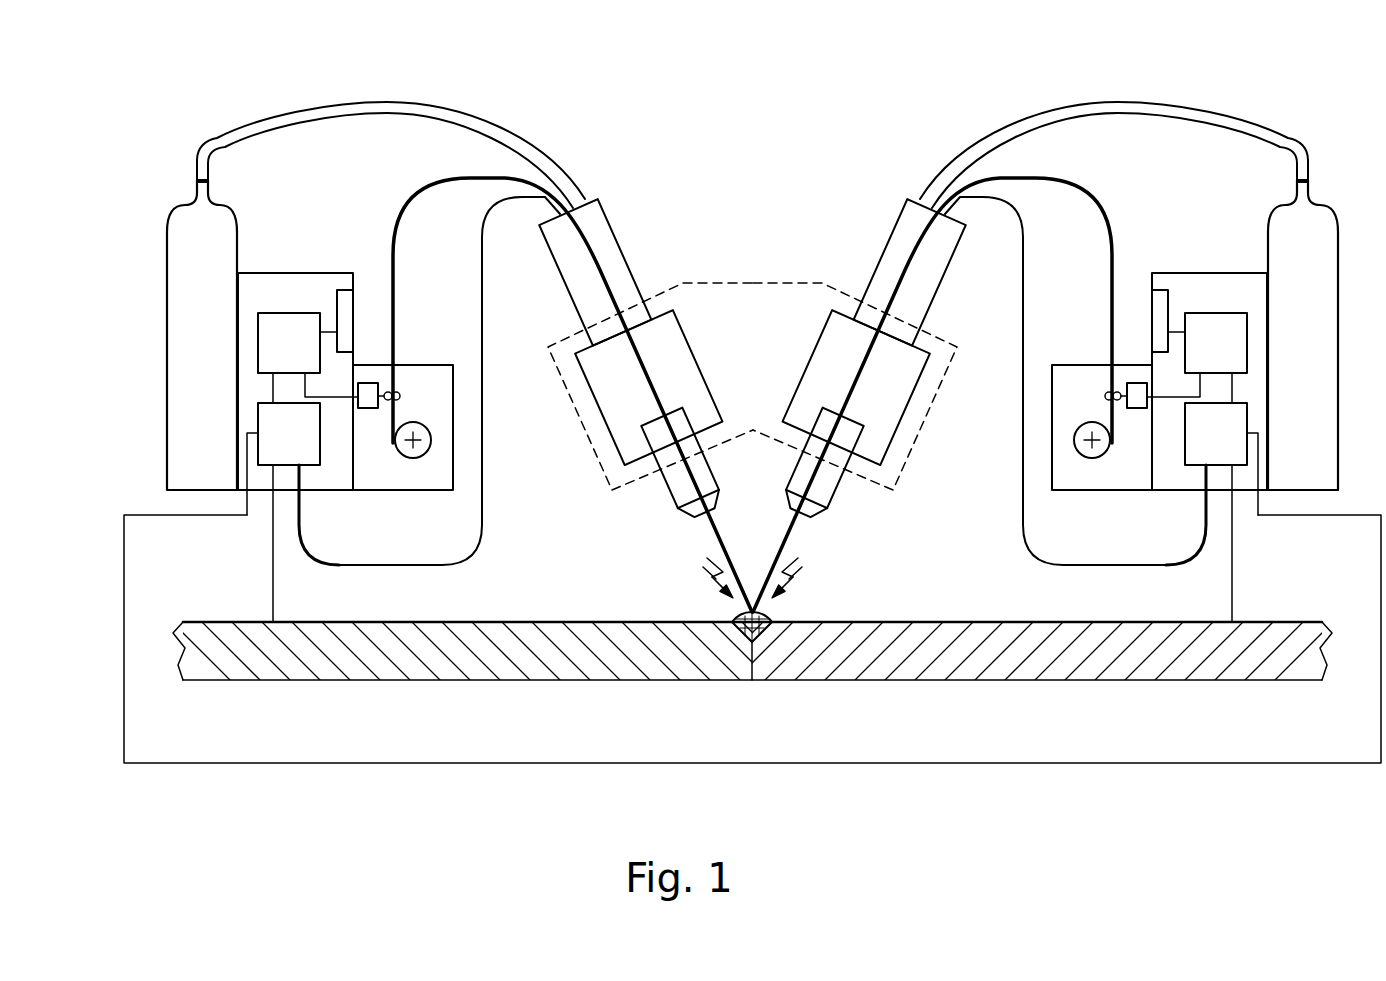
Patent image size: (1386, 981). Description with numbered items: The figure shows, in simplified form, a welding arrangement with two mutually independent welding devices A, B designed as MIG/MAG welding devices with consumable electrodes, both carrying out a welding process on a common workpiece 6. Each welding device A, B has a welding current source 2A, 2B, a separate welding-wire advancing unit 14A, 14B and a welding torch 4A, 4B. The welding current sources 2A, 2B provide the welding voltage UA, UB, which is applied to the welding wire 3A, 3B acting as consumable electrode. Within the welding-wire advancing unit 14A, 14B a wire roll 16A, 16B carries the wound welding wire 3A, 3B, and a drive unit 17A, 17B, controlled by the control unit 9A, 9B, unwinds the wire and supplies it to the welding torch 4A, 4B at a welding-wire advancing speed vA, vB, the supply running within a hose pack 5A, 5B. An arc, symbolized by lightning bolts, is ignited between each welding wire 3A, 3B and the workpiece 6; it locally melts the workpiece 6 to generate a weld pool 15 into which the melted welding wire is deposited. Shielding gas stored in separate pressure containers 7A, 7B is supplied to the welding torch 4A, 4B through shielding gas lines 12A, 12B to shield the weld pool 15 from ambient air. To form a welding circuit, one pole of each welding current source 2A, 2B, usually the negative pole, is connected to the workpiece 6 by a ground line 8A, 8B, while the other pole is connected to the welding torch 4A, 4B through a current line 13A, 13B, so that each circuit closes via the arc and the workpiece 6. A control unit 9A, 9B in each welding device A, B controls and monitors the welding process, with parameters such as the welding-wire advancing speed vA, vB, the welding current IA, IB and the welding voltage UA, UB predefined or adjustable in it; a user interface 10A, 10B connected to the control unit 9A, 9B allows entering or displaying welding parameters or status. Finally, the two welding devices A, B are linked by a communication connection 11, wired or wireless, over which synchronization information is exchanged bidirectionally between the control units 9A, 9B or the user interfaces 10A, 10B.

The welding current source 2A is at (310, 443).
The welding current source 2B is at (1195, 443).
The welding wire 3A is at (706, 527).
The welding wire 3B is at (799, 527).
The welding torch 4A is at (658, 268).
The welding torch 4B is at (847, 268).
The hose pack 5A is at (583, 277).
The hose pack 5B is at (922, 277).
The workpiece 6 is at (495, 650).
The container 7A is at (217, 338).
The container 7B is at (1288, 338).
The ground line 8A is at (270, 600).
The ground line 8B is at (1233, 603).
The control unit 9A is at (310, 353).
The control unit 9B is at (1195, 353).
The user interface 10A is at (338, 305).
The user interface 10B is at (1167, 305).
The communication connection 11 is at (265, 763).
The shielding gas line 12A is at (502, 125).
The shielding gas line 12B is at (1003, 125).
The current line 13A is at (482, 552).
The current line 13B is at (1023, 552).
The welding-wire advancing unit 14A is at (420, 477).
The welding-wire advancing unit 14B is at (1085, 477).
The weld pool 15 is at (745, 627).
The wire roll 16A is at (418, 425).
The wire roll 16B is at (1087, 425).
The drive unit 17A is at (366, 383).
The drive unit 17B is at (1138, 383).
The welding device A is at (278, 251).
The welding device B is at (1227, 251).
The welding-wire advancing speed vA is at (749, 565).
The welding-wire advancing speed vB is at (759, 565).
The welding current IA is at (262, 518).
The welding current IB is at (1243, 518).
The welding voltage UA is at (278, 502).
The welding voltage UB is at (1227, 502).